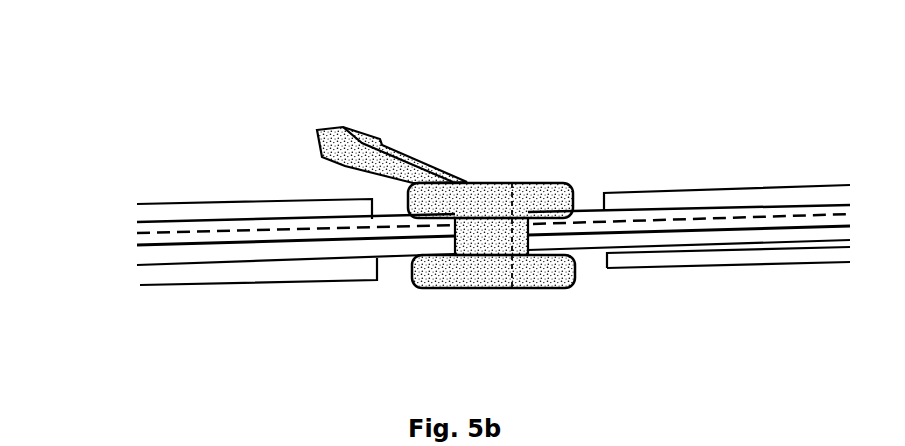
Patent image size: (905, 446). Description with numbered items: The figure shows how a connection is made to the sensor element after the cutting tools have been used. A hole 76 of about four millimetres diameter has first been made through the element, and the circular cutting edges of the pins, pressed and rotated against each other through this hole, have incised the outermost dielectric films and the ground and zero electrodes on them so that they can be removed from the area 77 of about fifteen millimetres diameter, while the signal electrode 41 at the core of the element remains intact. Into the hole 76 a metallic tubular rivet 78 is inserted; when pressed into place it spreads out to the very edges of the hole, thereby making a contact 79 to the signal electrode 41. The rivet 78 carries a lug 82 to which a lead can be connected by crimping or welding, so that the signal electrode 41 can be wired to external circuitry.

The signal electrode 41 is at (202, 249).
The hole 76 is at (574, 257).
The area 77 is at (588, 206).
The metallic tubular rivet 78 is at (541, 289).
The contact 79 is at (454, 240).
The lug 82 is at (333, 125).